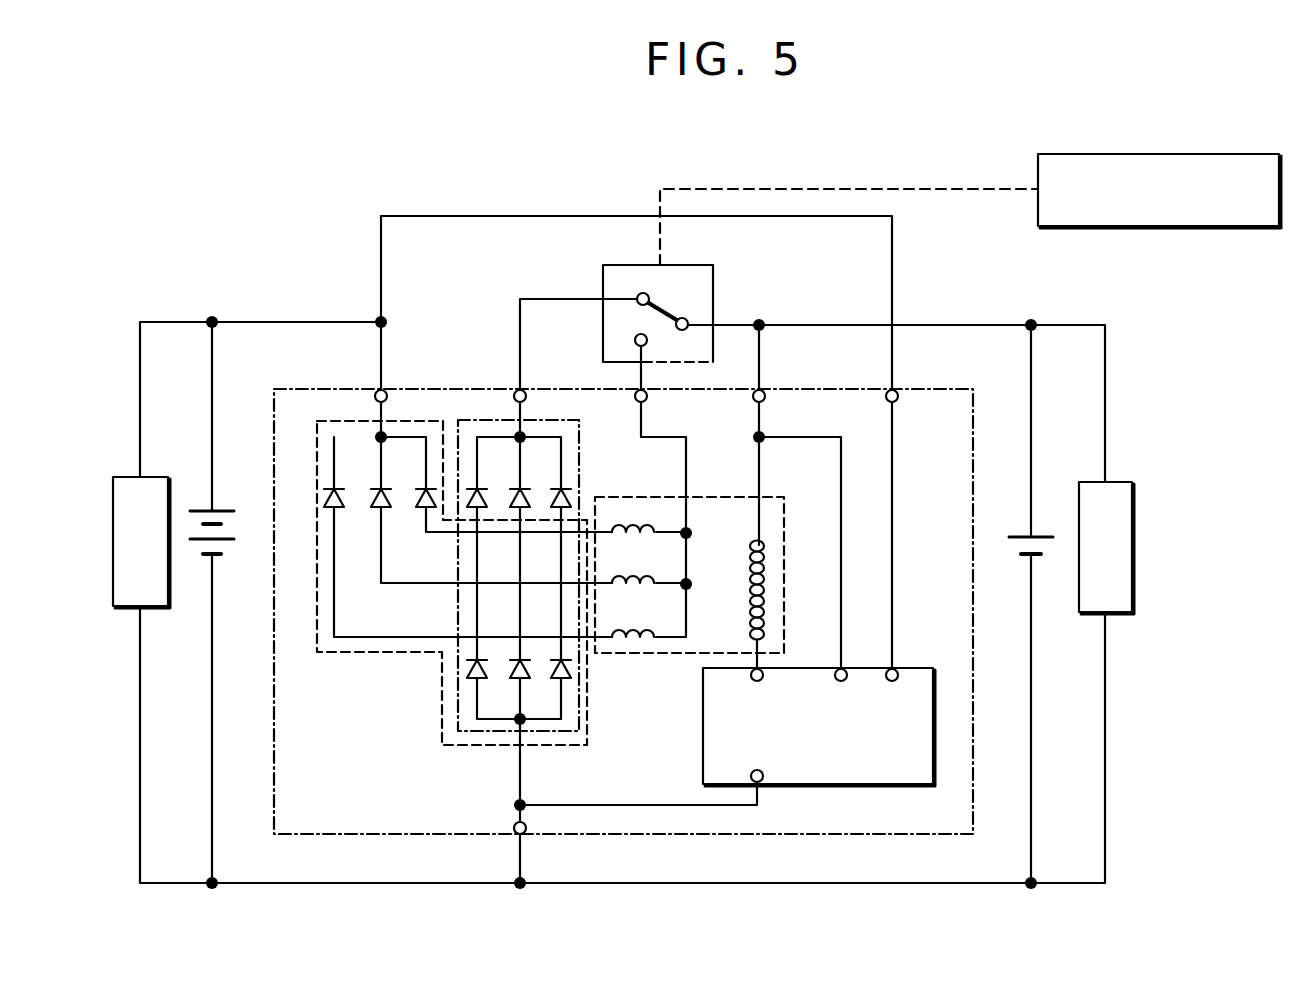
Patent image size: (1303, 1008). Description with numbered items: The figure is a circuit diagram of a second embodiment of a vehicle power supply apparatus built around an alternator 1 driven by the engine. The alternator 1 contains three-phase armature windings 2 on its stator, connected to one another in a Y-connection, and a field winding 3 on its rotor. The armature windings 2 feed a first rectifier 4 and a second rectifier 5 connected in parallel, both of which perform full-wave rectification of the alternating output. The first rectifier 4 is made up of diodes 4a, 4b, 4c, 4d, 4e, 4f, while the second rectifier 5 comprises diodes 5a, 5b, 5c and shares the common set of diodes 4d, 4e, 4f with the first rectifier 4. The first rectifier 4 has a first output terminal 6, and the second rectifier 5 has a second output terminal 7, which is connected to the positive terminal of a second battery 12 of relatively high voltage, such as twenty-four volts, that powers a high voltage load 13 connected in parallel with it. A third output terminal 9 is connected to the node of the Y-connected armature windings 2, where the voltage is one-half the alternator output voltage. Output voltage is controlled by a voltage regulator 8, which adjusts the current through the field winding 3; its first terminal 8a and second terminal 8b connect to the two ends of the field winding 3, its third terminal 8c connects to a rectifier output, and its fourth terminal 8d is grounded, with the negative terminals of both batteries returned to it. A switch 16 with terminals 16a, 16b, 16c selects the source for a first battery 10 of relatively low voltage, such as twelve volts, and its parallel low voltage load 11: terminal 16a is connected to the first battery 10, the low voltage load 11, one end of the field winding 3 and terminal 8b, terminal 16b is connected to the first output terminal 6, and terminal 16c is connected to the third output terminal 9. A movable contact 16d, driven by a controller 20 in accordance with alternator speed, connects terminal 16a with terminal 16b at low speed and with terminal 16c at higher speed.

The alternator 1 is at (679, 690).
The armature windings 2 is at (643, 655).
The field winding 3 is at (762, 548).
The first rectifier 4 is at (573, 420).
The diode 4a is at (486, 497).
The diode 4b is at (530, 497).
The diode 4c is at (573, 503).
The diode 4d is at (472, 682).
The diode 4e is at (515, 682).
The diode 4f is at (553, 683).
The second rectifier 5 is at (330, 421).
The diode 5a is at (332, 510).
The diode 5b is at (378, 510).
The diode 5c is at (424, 510).
The first output terminal 6 is at (524, 392).
The second output terminal 7 is at (386, 390).
The voltage regulator 8 is at (910, 786).
The first terminal 8a is at (763, 672).
The second terminal 8b is at (843, 668).
The third terminal 8c is at (895, 668).
The fourth terminal 8d is at (759, 782).
The third output terminal 9 is at (648, 398).
The first battery 10 is at (1030, 535).
The low voltage load 11 is at (1134, 502).
The second battery 12 is at (228, 507).
The high voltage load 13 is at (150, 474).
The switch 16 is at (713, 272).
The terminal 16a is at (688, 324).
The terminal 16b is at (638, 295).
The terminal 16c is at (637, 336).
The movable contact 16d is at (663, 305).
The controller 20 is at (1174, 226).